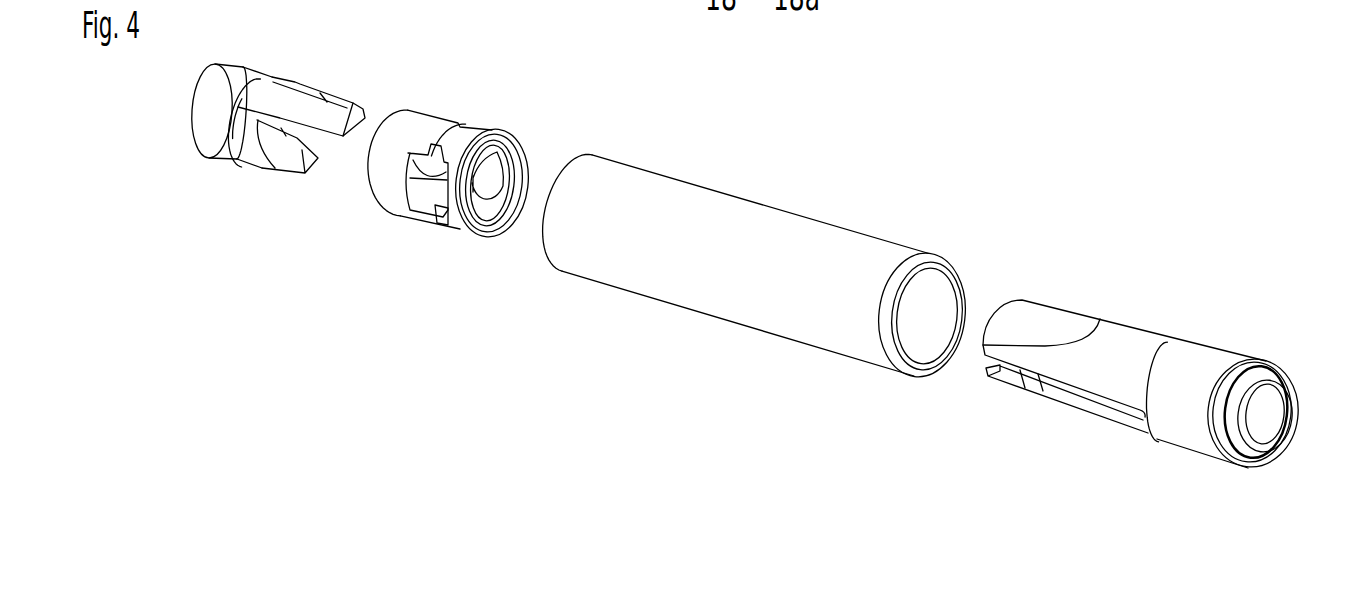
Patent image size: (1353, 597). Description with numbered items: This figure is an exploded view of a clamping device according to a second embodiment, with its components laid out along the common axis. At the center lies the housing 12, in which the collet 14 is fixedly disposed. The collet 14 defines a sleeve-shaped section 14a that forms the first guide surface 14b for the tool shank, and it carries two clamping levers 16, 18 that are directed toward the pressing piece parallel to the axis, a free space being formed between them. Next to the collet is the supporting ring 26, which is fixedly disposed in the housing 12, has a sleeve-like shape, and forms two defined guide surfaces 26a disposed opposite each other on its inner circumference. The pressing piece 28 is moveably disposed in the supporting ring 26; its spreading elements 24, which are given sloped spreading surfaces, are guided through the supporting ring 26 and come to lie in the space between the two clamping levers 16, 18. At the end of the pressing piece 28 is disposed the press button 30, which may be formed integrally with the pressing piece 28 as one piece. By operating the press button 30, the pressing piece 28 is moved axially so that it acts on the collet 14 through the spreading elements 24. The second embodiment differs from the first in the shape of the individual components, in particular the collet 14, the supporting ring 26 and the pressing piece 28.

The housing 12 is at (752, 230).
The collet 14 is at (1165, 362).
The sleeve-shaped section 14a is at (1205, 368).
The first guide surface 14b is at (1272, 410).
The clamping lever 16 is at (1112, 338).
The clamping lever 18 is at (1038, 393).
The spreading elements 24 is at (325, 93).
The supporting ring 26 is at (407, 125).
The guide surfaces 26a is at (473, 178).
The pressing piece 28 is at (240, 78).
The press button 30 is at (219, 64).